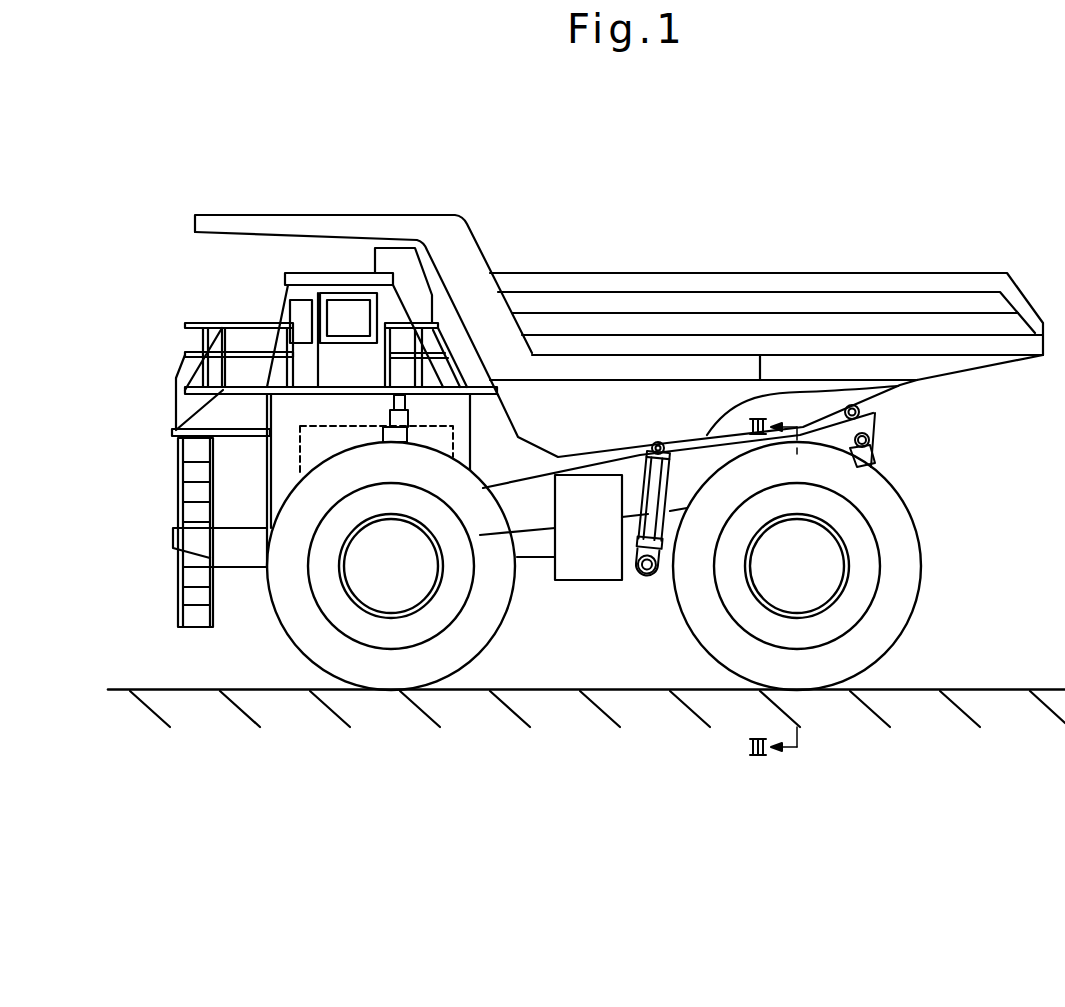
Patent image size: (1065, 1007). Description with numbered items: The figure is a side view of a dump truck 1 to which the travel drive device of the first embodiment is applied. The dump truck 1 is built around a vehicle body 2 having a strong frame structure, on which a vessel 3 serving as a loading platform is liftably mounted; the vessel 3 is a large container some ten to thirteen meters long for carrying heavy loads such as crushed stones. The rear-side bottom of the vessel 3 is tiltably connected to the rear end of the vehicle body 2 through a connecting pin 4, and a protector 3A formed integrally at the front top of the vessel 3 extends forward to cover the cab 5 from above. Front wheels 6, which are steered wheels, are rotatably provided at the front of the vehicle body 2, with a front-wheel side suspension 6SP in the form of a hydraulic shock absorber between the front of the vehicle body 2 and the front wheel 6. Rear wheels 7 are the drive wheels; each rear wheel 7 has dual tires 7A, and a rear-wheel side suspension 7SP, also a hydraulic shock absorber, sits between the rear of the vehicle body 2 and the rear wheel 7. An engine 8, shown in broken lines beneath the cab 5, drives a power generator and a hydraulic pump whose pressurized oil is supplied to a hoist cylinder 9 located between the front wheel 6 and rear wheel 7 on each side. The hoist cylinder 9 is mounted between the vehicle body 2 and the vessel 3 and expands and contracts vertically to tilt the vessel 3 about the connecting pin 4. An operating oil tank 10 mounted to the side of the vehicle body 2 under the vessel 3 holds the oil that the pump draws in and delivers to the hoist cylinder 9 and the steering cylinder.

The dump truck 1 is at (603, 230).
The vehicle body 2 is at (532, 510).
The vessel 3 is at (775, 285).
The protector 3A is at (320, 228).
The connecting pin 4 is at (857, 415).
The cab 5 is at (297, 310).
The front wheel 6 is at (392, 668).
The front-wheel side suspension 6SP is at (410, 438).
The rear wheel 7 is at (692, 637).
The tire 7A is at (902, 572).
The rear-wheel side suspension 7SP is at (868, 455).
The engine 8 is at (300, 426).
The hoist cylinder 9 is at (663, 525).
The operating oil tank 10 is at (588, 533).